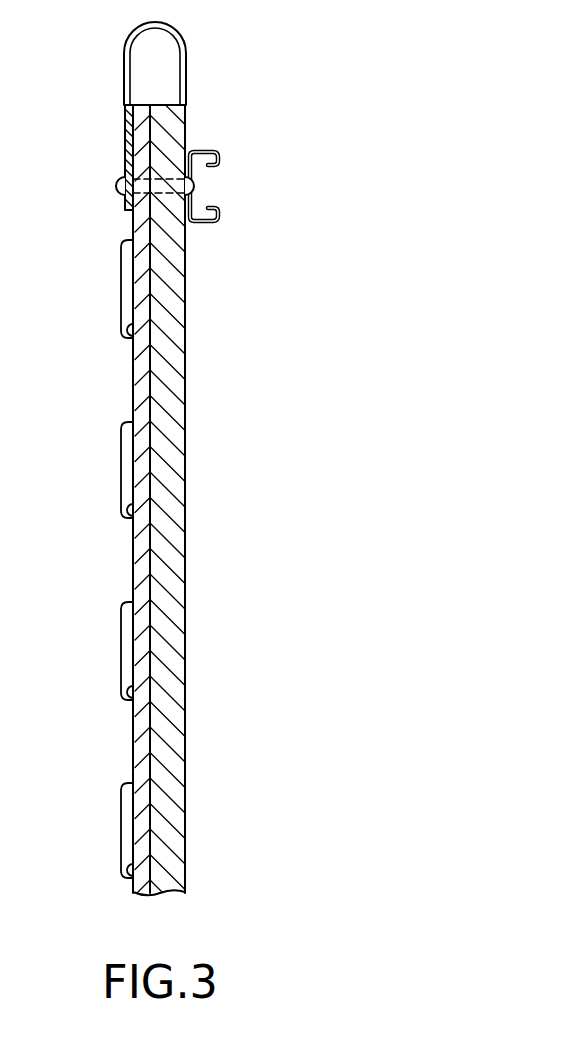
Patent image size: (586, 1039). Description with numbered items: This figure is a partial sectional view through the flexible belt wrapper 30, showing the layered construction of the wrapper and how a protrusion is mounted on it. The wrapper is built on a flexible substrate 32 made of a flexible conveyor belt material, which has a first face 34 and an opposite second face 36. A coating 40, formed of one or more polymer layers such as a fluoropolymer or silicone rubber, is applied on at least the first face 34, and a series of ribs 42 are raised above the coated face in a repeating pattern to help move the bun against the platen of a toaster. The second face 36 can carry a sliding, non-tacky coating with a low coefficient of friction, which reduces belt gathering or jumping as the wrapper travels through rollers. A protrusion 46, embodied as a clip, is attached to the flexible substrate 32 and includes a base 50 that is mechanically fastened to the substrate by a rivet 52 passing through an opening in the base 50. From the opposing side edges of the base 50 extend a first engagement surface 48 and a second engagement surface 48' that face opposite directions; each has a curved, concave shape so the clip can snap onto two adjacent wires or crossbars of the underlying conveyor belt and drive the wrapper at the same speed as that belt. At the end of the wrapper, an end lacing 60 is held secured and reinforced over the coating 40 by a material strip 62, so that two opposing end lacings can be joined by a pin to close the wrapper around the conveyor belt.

The flexible belt wrapper 30 is at (237, 685).
The flexible substrate 32 is at (173, 513).
The first face 34 is at (140, 555).
The second face 36 is at (185, 403).
The coating 40 is at (131, 382).
The ribs 42 is at (120, 290).
The protrusion 46 is at (195, 138).
The engagement surface 48 is at (255, 156).
The second engagement surface 48' is at (258, 216).
The base 50 is at (194, 188).
The rivet 52 is at (117, 188).
The end lacing 60 is at (186, 60).
The material strip 62 is at (125, 163).